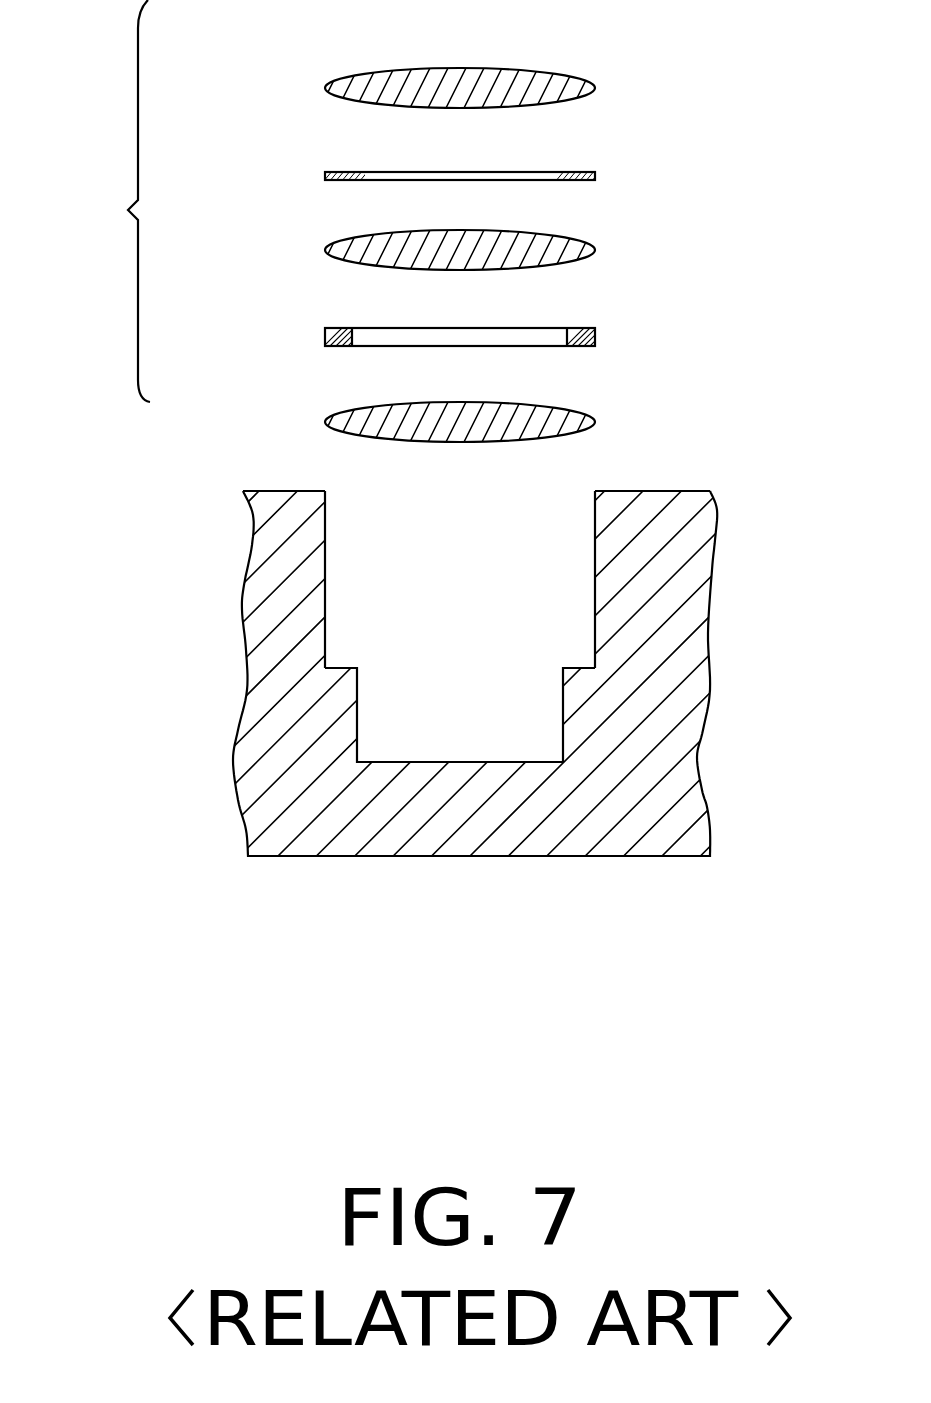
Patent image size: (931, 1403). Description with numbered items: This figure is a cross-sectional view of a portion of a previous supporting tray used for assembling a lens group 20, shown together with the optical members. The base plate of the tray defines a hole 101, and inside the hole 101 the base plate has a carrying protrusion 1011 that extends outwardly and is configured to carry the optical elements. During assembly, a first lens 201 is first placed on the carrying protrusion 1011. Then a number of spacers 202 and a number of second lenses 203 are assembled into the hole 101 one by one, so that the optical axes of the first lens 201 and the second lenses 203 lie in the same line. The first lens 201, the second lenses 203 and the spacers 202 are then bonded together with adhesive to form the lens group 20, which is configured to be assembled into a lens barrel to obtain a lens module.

The lens group 20 is at (343, 201).
The second lens 203 is at (350, 80).
The spacer 202 is at (327, 327).
The first lens 201 is at (337, 413).
The hole 101 is at (537, 537).
The carrying protrusion 1011 is at (585, 657).